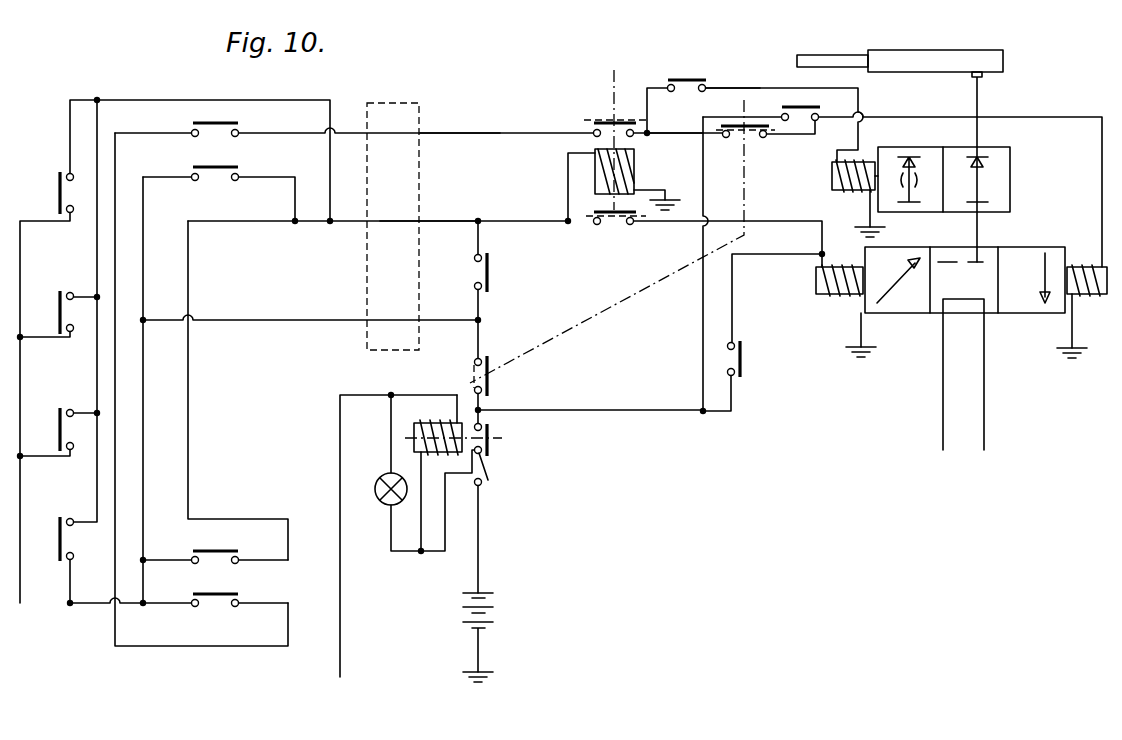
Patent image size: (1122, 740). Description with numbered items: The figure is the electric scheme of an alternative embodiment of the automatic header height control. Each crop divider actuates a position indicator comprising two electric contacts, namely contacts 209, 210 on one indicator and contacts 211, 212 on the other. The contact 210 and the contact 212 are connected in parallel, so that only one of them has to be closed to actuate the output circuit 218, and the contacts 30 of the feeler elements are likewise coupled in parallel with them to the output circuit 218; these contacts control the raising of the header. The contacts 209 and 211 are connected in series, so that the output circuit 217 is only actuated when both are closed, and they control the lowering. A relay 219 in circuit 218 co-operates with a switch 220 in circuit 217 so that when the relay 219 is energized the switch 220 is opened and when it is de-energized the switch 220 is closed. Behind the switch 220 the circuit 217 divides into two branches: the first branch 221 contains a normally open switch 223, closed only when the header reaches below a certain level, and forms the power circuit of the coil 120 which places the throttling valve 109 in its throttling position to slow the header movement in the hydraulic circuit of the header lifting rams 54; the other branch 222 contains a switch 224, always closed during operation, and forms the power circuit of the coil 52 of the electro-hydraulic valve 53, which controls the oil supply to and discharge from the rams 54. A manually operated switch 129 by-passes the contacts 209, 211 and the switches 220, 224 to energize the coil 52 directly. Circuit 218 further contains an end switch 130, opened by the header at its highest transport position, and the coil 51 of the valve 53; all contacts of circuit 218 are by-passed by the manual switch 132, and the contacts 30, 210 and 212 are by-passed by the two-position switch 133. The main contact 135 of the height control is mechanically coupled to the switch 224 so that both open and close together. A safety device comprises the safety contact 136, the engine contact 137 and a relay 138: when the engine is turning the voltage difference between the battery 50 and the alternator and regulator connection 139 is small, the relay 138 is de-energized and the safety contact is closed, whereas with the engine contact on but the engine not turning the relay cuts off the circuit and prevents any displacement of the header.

The electric contacts of the feeler elements 30 is at (60, 190).
The electric contact 209 is at (238, 124).
The electric contact 210 is at (238, 168).
The electric contact 211 is at (238, 595).
The electric contact 212 is at (254, 552).
The output circuit 217 is at (492, 136).
The output circuit 218 is at (455, 210).
The relay 219 is at (635, 166).
The switch 220 is at (596, 124).
The first branch 221 is at (764, 88).
The conductor 222 is at (678, 134).
The switch 223 is at (686, 80).
The switch 224 is at (748, 138).
The switch 129 is at (800, 103).
The end switch 130 is at (618, 226).
The coil 120 is at (832, 176).
The throttling valve 109 is at (1010, 174).
The header lifting rams 54 is at (985, 63).
The coil 52 is at (1082, 267).
The coil 51 is at (818, 287).
The electro-hydraulic valve 53 is at (990, 292).
The switch 132 is at (742, 358).
The switch 133 is at (488, 276).
The main contact 135 is at (488, 383).
The safety contact 136 is at (490, 442).
The engine contact 137 is at (490, 478).
The relay 138 is at (430, 423).
The connection to alternator and voltage regulator 139 is at (340, 470).
The battery 50 is at (490, 607).